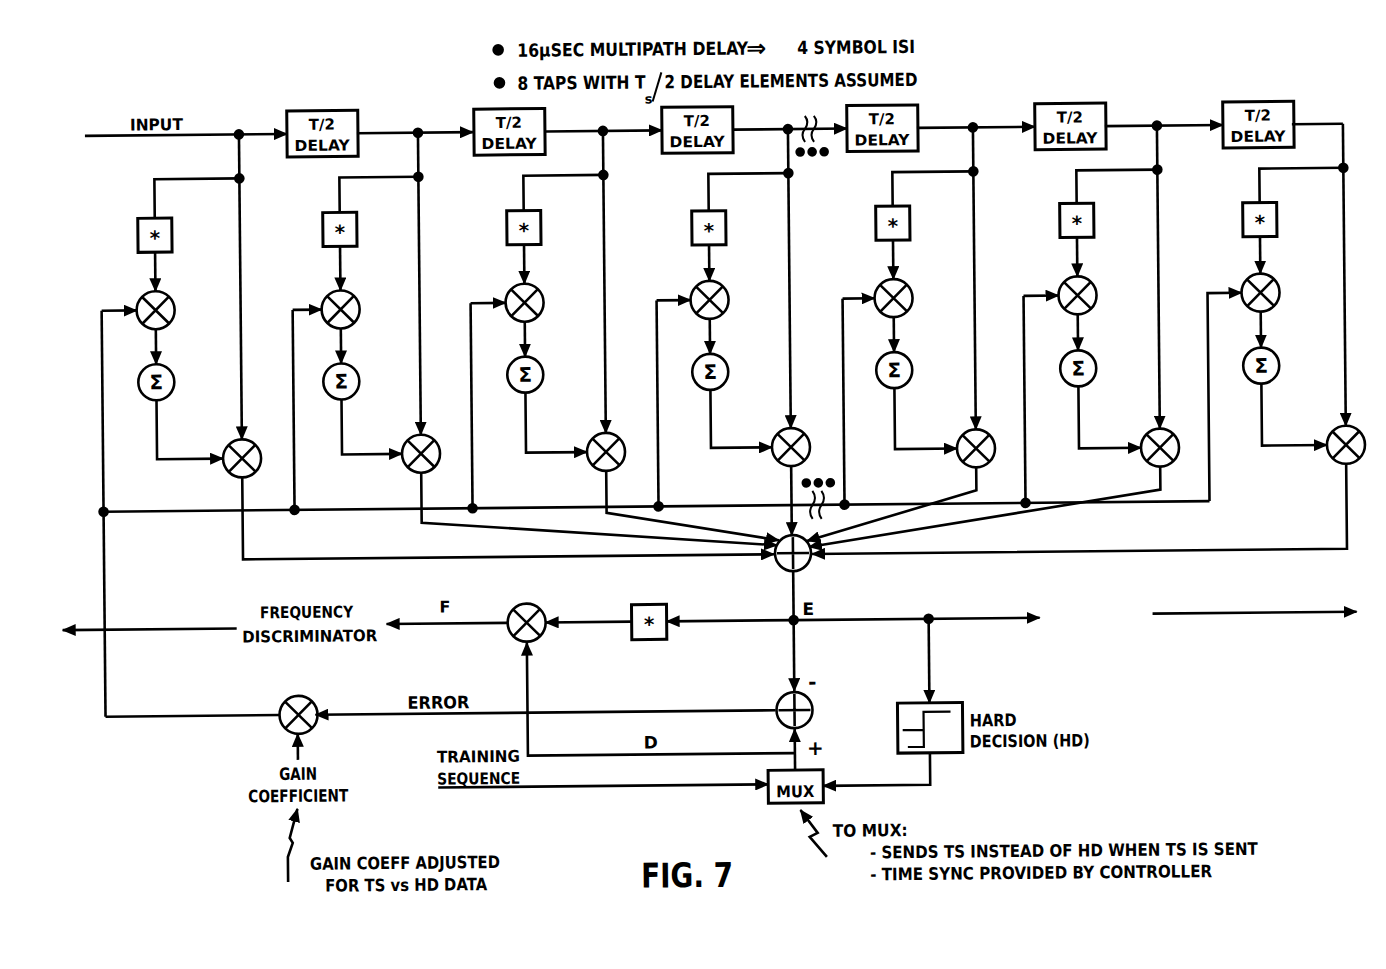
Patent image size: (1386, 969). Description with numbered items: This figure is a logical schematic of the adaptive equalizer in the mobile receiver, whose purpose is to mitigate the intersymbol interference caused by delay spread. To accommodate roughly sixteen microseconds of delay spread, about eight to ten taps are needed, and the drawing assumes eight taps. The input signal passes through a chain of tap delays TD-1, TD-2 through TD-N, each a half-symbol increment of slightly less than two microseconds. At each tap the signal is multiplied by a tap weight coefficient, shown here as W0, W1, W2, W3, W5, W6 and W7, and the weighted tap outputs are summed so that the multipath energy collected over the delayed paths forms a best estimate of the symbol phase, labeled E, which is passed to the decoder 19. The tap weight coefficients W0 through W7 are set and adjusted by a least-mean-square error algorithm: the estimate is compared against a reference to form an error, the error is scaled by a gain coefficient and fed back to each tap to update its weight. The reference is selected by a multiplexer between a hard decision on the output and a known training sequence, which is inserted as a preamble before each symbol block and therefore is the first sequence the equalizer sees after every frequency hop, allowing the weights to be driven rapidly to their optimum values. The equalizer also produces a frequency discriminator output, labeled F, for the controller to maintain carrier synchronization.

The decoder 19 is at (1205, 628).
The tap delay TD-1 is at (311, 108).
The tap delay TD-2 is at (476, 113).
The tap delay TD-N is at (1225, 105).
The tap weight coefficient W0 is at (436, 422).
The tap weight coefficient W1 is at (532, 339).
The tap weight coefficient W2 is at (622, 336).
The tap weight coefficient W3 is at (731, 332).
The tap weight coefficient W5 is at (899, 334).
The tap weight coefficient W6 is at (992, 336).
The tap weight coefficient W7 is at (1087, 339).